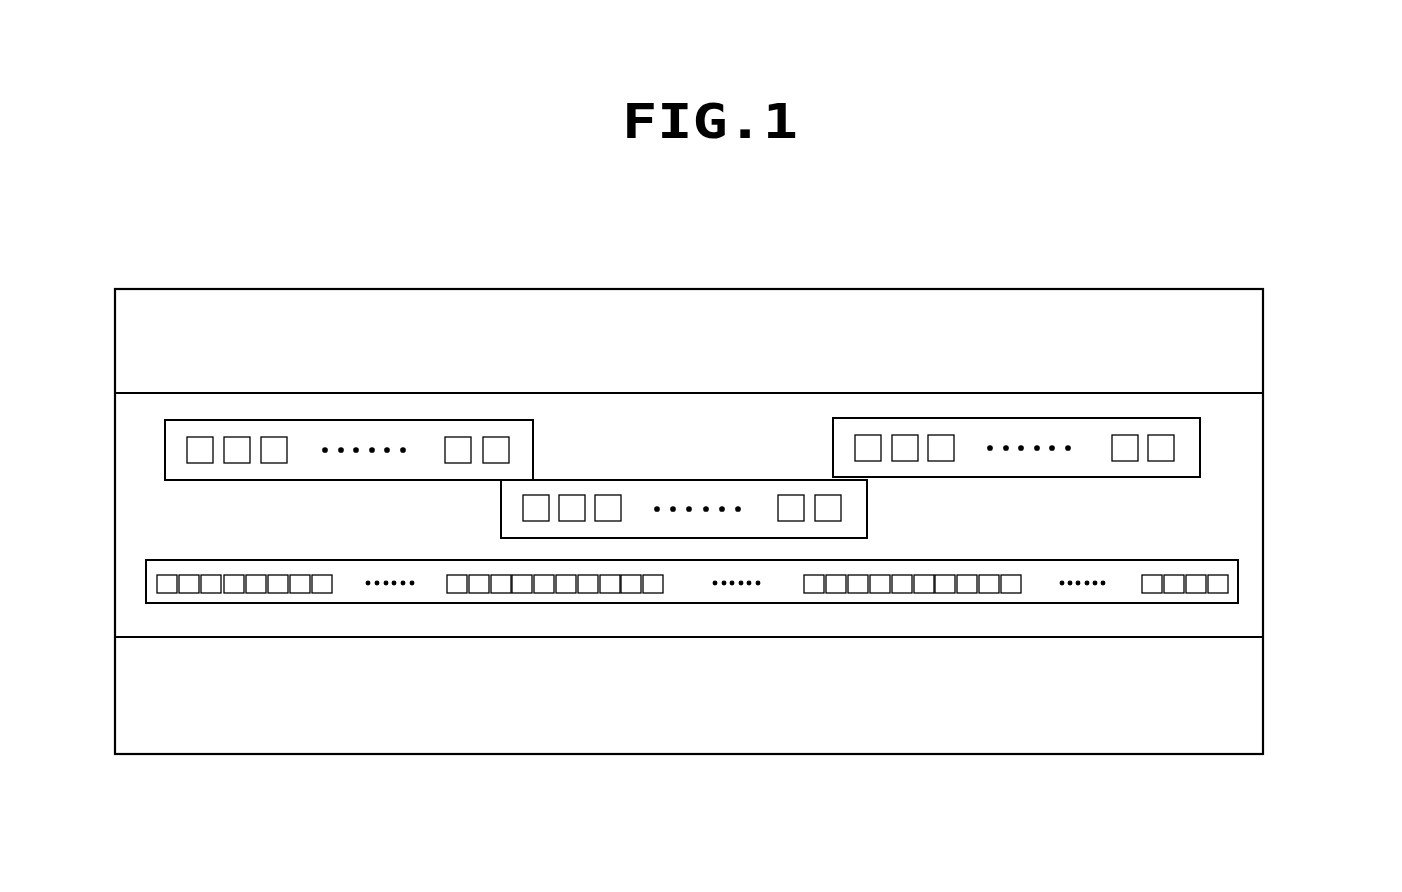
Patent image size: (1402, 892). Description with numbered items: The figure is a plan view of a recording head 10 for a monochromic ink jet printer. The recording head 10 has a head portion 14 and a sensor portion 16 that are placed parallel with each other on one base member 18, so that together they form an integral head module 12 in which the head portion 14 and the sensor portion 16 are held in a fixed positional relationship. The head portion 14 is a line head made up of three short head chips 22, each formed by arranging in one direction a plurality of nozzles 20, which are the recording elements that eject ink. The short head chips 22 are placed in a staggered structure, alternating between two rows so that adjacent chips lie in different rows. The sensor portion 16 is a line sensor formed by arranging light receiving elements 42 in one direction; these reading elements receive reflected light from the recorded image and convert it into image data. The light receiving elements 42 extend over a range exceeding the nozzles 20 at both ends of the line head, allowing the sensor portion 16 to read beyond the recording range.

The recording head 10 is at (1156, 234).
The integral head module 12 is at (1070, 652).
The head portion 14 is at (1274, 455).
The sensor portion 16 is at (1274, 592).
The base member 18 is at (843, 638).
The nozzles 20 is at (268, 438).
The short head chips 22 is at (247, 420).
The light receiving elements 42 is at (280, 584).